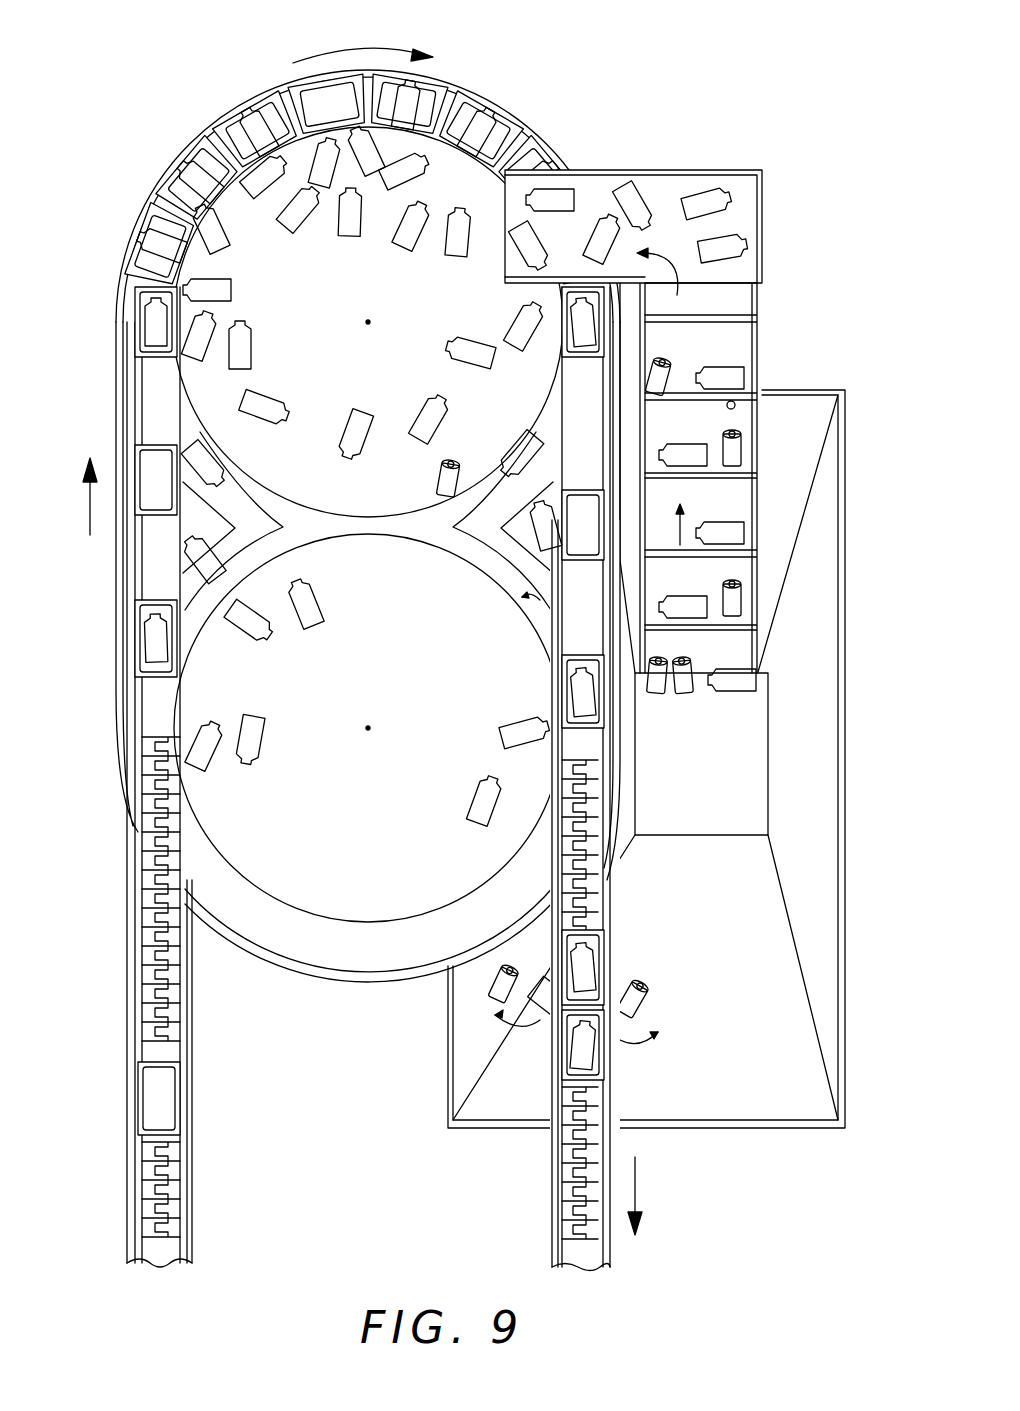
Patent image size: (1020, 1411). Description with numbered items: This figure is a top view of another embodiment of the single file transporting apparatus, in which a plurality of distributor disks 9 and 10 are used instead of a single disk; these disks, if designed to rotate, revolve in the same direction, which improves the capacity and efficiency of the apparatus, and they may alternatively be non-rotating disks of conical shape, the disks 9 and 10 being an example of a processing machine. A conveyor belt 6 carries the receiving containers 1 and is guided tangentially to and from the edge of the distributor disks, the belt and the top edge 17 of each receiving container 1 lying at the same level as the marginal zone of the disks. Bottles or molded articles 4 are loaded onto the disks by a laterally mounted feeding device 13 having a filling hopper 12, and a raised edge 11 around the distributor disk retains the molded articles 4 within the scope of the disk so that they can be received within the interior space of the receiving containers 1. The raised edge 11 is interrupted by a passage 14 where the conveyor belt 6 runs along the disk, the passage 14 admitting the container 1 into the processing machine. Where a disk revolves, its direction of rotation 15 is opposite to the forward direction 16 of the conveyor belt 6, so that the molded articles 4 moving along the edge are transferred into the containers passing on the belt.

The receiving container 1 is at (503, 110).
The molded articles 4 is at (268, 118).
The conveyor belt 6 is at (176, 1178).
The distributor disk 9 is at (198, 397).
The distributor disk 10 is at (335, 935).
The raised edge 11 is at (390, 985).
The filling hopper 12 is at (752, 1105).
The feeding device 13 is at (706, 171).
The passage 14 is at (157, 708).
The direction of rotation 15 is at (293, 287).
The forward direction 16 is at (254, 310).
The top edge 17 is at (180, 1118).